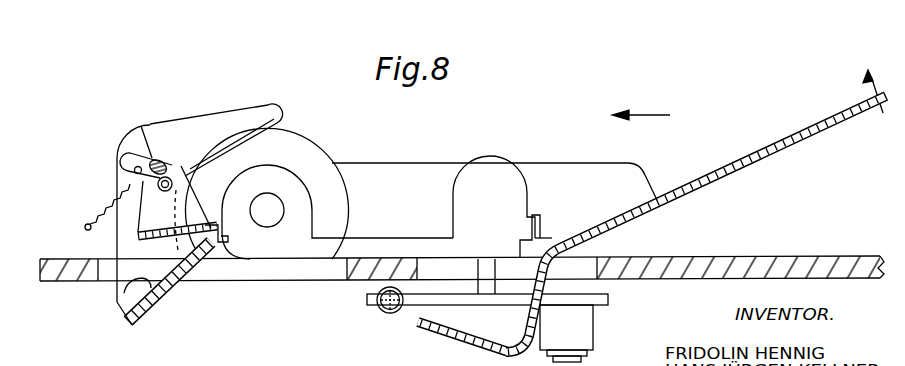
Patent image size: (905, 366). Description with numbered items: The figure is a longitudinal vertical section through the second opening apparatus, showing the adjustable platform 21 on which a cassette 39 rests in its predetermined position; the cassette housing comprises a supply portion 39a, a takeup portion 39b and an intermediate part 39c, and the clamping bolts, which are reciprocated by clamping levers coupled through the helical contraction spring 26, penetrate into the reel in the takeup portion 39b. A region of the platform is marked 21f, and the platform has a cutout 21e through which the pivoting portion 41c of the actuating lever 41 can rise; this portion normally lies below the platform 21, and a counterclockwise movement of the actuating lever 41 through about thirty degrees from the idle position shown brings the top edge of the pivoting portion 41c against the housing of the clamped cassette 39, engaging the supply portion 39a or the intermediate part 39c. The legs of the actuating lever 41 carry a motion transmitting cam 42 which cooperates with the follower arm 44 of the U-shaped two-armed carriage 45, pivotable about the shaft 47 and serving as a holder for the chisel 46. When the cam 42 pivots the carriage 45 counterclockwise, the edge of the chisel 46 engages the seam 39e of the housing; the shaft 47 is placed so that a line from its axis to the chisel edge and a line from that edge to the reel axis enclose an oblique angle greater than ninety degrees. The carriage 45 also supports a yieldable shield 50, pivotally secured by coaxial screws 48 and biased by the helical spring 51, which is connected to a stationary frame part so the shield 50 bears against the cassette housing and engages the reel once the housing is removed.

The platform 21 is at (843, 262).
The cutout 21e is at (547, 252).
The plate portion 21f is at (328, 276).
The helical contraction spring 26 is at (390, 314).
The cassette 39 is at (411, 232).
The supply portion 39a is at (503, 182).
The takeup portion 39b is at (300, 185).
The intermediate part 39c is at (370, 240).
The seam 39e is at (225, 243).
The actuating lever 41 is at (827, 123).
The pivoting portion 41c is at (462, 330).
The motion transmitting cam 42 is at (313, 148).
The follower arm 44 is at (271, 107).
The carriage 45 is at (117, 170).
The chisel 46 is at (115, 303).
The shaft 47 is at (157, 160).
The coaxial screws 48 is at (181, 162).
The yieldable shield 50 is at (188, 289).
The helical spring 51 is at (86, 225).